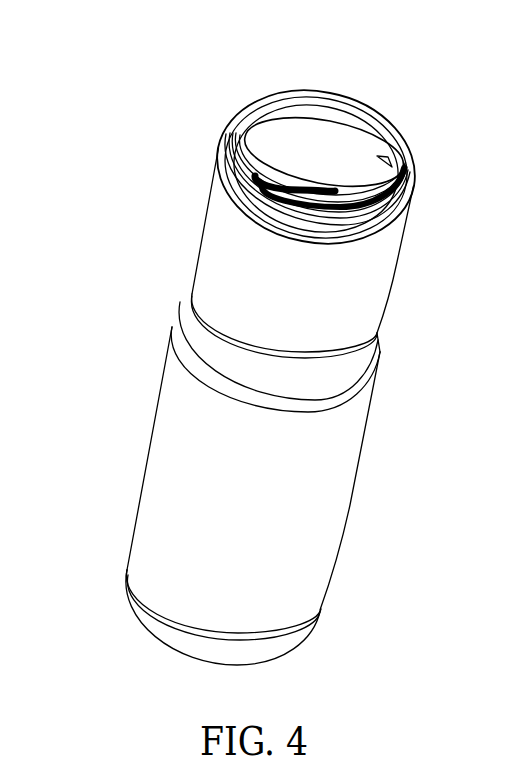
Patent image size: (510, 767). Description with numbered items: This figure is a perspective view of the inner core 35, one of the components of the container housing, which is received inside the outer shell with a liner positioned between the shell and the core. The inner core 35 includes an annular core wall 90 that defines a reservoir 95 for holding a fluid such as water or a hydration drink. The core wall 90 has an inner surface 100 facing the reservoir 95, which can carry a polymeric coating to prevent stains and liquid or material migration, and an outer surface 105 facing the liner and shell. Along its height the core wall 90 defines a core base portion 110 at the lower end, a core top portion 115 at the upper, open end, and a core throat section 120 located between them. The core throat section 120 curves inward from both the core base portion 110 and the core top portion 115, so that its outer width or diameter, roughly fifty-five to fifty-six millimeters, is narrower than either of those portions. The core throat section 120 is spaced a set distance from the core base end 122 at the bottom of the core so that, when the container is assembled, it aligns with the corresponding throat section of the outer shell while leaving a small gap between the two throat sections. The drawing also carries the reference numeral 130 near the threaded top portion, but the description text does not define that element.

The container 35 is at (66, 42).
The neck 90 is at (216, 223).
The thread notch 95 is at (393, 156).
The opening 100 is at (345, 170).
The neck portion 105 is at (305, 301).
The body 110 is at (156, 452).
The neck sidewall 115 is at (391, 267).
The shoulder 120 is at (382, 349).
The base 122 is at (163, 623).
The threads 130 is at (410, 192).